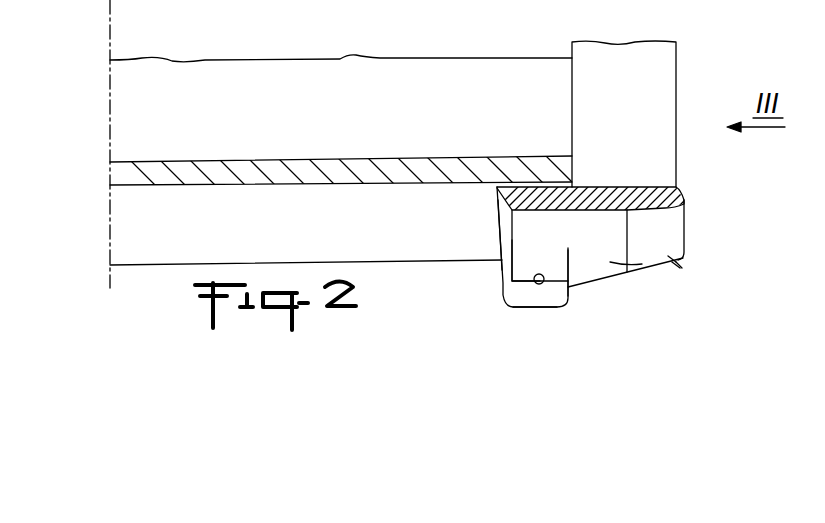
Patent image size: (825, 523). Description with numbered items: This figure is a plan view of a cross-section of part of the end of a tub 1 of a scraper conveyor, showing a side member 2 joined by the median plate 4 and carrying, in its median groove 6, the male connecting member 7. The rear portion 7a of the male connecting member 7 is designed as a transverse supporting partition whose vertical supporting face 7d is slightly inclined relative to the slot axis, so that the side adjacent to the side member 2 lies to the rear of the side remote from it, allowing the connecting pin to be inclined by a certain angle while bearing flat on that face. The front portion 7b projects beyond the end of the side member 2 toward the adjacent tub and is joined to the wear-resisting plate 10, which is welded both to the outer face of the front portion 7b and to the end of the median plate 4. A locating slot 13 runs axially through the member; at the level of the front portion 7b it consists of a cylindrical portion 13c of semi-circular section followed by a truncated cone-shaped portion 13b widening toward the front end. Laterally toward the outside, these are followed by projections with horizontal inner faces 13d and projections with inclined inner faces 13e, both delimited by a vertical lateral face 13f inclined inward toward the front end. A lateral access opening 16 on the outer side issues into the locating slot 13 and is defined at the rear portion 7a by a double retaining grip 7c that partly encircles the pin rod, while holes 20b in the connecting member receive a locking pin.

The tub 1 is at (104, 275).
The side member 2 is at (236, 177).
The median plate 4 is at (141, 113).
The median groove 6 is at (137, 236).
The male connecting member 7 is at (623, 288).
The rear portion 7a is at (517, 308).
The front portion 7b is at (620, 186).
The double retaining grip 7c is at (555, 289).
The vertical supporting face 7d is at (502, 239).
The wear-resisting plate 10 is at (615, 60).
The locating slot 13 is at (524, 218).
The truncated cone-shaped portion 13b is at (675, 212).
The cylindrical portion 13c is at (613, 242).
The projection with horizontal inner face 13d is at (670, 262).
The projection with inclined inner face 13e is at (672, 262).
The vertical lateral face 13f is at (678, 262).
The lateral access opening 16 is at (508, 293).
The hole 20b is at (539, 285).